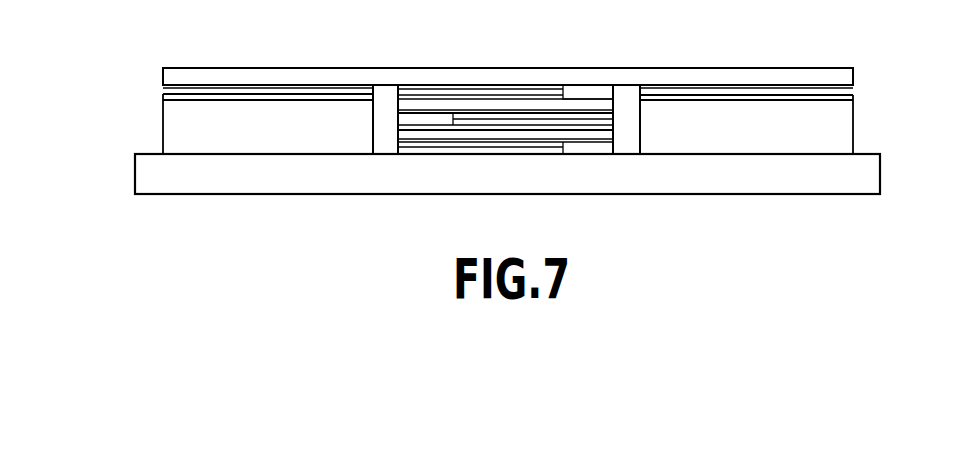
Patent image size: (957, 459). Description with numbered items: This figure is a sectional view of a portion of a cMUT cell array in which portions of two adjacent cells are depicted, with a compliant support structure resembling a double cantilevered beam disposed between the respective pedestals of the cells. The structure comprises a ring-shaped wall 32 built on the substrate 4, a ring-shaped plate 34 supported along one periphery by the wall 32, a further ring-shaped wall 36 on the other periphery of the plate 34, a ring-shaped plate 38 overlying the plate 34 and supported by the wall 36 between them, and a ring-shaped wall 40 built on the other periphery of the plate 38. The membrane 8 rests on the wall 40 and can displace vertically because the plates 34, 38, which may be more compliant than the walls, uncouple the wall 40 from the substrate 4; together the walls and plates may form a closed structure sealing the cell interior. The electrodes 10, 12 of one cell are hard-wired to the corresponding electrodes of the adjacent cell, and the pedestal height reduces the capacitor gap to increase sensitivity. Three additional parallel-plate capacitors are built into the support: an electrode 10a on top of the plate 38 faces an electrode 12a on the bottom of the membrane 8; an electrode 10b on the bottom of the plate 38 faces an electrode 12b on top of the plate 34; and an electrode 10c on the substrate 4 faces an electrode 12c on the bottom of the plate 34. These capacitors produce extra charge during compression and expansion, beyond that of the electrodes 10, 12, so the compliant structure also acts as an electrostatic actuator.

The substrate 4 is at (142, 175).
The membrane 8 is at (680, 78).
The electrode 10 is at (188, 97).
The electrode 10a is at (527, 98).
The electrode 10b is at (590, 120).
The electrode 10c is at (528, 148).
The electrode 12 is at (212, 87).
The electrode 12a is at (405, 100).
The electrode 12b is at (470, 125).
The electrode 12c is at (502, 142).
The ring-shaped wall 32 is at (743, 115).
The ring-shaped plate 34 is at (427, 130).
The ring-shaped wall 36 is at (408, 122).
The ring-shaped plate 38 is at (473, 105).
The ring-shaped wall 40 is at (577, 92).